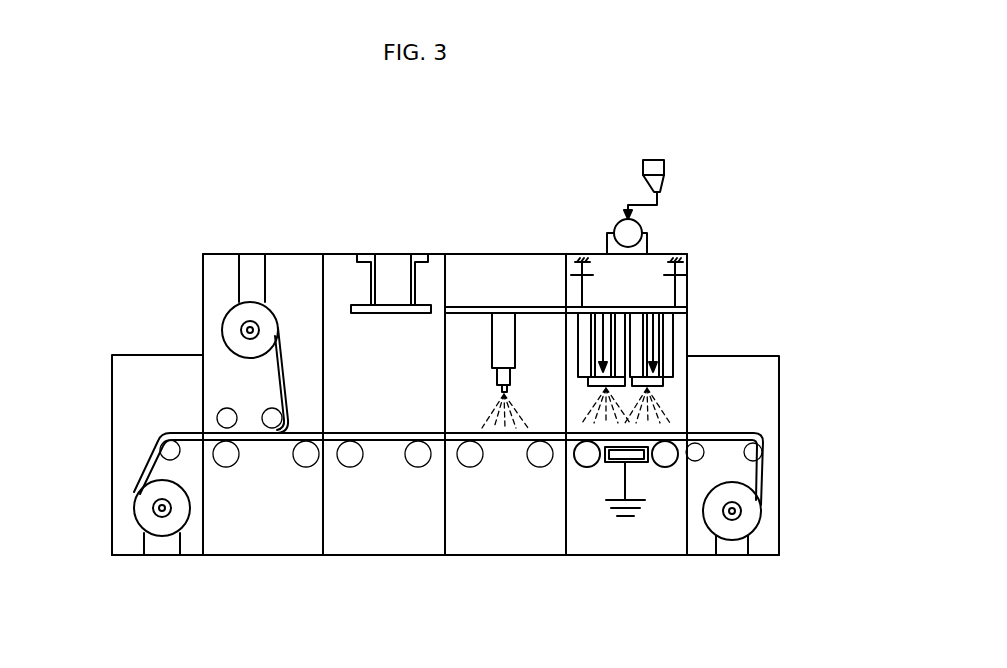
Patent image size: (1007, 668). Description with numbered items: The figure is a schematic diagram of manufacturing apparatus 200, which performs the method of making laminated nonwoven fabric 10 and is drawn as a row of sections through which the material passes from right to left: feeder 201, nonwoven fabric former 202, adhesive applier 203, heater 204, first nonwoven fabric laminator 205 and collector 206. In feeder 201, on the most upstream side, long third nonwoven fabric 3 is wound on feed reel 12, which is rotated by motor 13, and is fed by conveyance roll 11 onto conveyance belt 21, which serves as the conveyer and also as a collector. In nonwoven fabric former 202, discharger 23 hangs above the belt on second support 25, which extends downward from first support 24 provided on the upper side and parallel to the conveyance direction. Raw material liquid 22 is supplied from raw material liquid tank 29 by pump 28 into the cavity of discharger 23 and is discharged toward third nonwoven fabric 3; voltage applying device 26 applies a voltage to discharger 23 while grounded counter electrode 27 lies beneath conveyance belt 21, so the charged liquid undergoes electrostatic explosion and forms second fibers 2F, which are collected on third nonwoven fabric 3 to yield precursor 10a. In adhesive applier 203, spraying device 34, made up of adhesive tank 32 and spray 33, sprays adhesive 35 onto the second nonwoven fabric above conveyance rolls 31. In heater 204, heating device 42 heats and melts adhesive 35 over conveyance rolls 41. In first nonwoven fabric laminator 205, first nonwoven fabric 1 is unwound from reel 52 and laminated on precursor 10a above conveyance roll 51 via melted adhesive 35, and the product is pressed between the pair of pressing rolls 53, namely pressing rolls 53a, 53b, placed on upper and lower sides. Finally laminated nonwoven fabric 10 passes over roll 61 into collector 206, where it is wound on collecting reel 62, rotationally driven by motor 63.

The manufacturing apparatus 200 is at (197, 227).
The first nonwoven fabric 1 is at (285, 362).
The second fibers 2F is at (660, 410).
The third nonwoven fabric 3 is at (765, 478).
The laminated nonwoven fabric 10 is at (152, 447).
The precursor 10a is at (323, 412).
The conveyance roll 11 is at (710, 440).
The feed reel 12 is at (750, 514).
The motor 13 is at (742, 547).
The conveyance belt 21 is at (600, 468).
The raw material liquid 22 is at (657, 180).
The discharger 23 is at (663, 383).
The first support 24 is at (685, 305).
The second support 25 is at (665, 340).
The voltage applying device 26 is at (683, 285).
The counter electrode 27 is at (638, 466).
The pump 28 is at (642, 228).
The raw material liquid tank 29 is at (660, 160).
The conveyance rolls 31 is at (540, 455).
The adhesive tank 32 is at (500, 330).
The spray 33 is at (514, 378).
The spraying device 34 is at (545, 222).
The adhesive 35 is at (500, 413).
The conveyance rolls 41 is at (418, 455).
The heating device 42 is at (356, 280).
The conveyance roll 51 is at (306, 454).
The reel 52 is at (232, 318).
The pressing rolls 53 is at (92, 300).
The pressing roll 53a is at (227, 418).
The pressing roll 53b is at (226, 454).
The roll 61 is at (160, 435).
The collecting reel 62 is at (147, 500).
The motor 63 is at (153, 546).
The feeder 201 is at (778, 573).
The nonwoven fabric former 202 is at (686, 592).
The adhesive applier 203 is at (564, 592).
The heater 204 is at (442, 592).
The first nonwoven fabric laminator 205 is at (320, 592).
The collector 206 is at (200, 573).